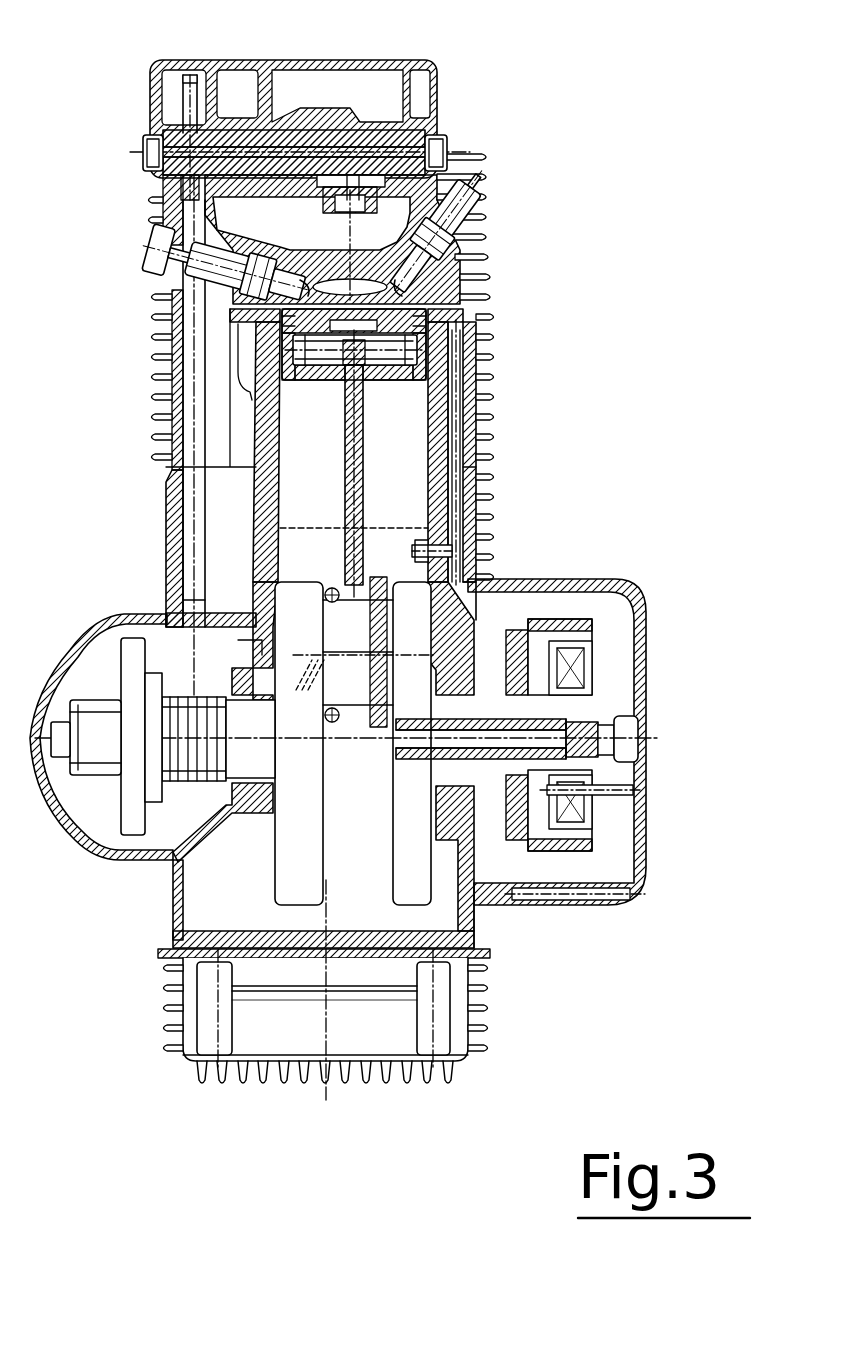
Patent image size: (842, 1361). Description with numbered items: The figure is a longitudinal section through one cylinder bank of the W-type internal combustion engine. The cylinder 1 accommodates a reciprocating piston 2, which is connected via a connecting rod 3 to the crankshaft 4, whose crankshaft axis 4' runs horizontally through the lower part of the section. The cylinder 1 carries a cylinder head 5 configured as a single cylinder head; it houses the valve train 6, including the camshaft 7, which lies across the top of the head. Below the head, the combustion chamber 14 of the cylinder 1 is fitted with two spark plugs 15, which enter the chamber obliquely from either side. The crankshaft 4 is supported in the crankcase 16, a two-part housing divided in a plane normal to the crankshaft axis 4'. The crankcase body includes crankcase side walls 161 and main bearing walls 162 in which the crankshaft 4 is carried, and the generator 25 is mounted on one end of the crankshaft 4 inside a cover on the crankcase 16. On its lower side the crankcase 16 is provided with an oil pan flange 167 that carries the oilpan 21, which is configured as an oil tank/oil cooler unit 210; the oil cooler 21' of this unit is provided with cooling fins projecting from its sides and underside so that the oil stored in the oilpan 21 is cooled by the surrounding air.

The cylinder 1 is at (480, 357).
The piston 2 is at (288, 382).
The connecting rod 3 is at (360, 488).
The crankshaft 4 is at (347, 741).
The crankshaft axis 4' is at (101, 753).
The cylinder head 5 is at (447, 182).
The valve train 6 is at (176, 87).
The camshaft 7 is at (322, 132).
The combustion chamber 14 is at (407, 297).
The spark plugs 15 is at (213, 262).
The crankcase 16 is at (482, 905).
The crankcase side walls 161 is at (470, 542).
The main bearing walls 162 is at (250, 658).
The oil pan flange 167 is at (186, 960).
The oilpan 21 is at (380, 1013).
The oil cooler 21' is at (380, 1008).
The generator 25 is at (600, 635).
The oil tank/oil cooler unit 210 is at (242, 1036).